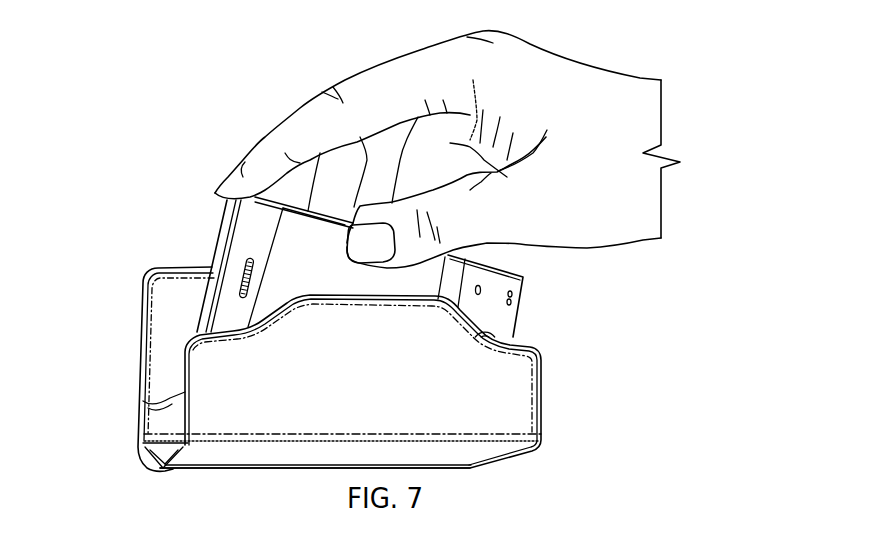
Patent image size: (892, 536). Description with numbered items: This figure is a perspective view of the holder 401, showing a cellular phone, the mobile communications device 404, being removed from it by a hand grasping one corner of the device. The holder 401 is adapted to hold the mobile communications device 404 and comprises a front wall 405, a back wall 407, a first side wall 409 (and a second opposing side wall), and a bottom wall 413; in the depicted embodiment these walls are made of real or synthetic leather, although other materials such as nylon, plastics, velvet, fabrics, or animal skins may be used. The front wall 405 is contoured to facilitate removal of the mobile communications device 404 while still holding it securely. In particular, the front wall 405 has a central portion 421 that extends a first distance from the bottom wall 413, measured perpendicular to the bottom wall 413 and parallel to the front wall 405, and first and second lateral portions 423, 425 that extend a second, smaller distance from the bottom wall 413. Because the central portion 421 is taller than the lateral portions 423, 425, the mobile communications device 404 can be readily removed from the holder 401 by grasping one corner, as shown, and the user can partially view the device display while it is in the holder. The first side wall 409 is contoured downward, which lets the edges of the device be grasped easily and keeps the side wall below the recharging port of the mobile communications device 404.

The holder 401 is at (120, 169).
The mobile communications device 404 is at (222, 240).
The front wall 405 is at (375, 424).
The back wall 407 is at (143, 305).
The first side wall 409 is at (152, 423).
The bottom wall 413 is at (307, 462).
The central portion 421 is at (383, 342).
The first lateral portion 423 is at (233, 396).
The second lateral portion 425 is at (518, 392).